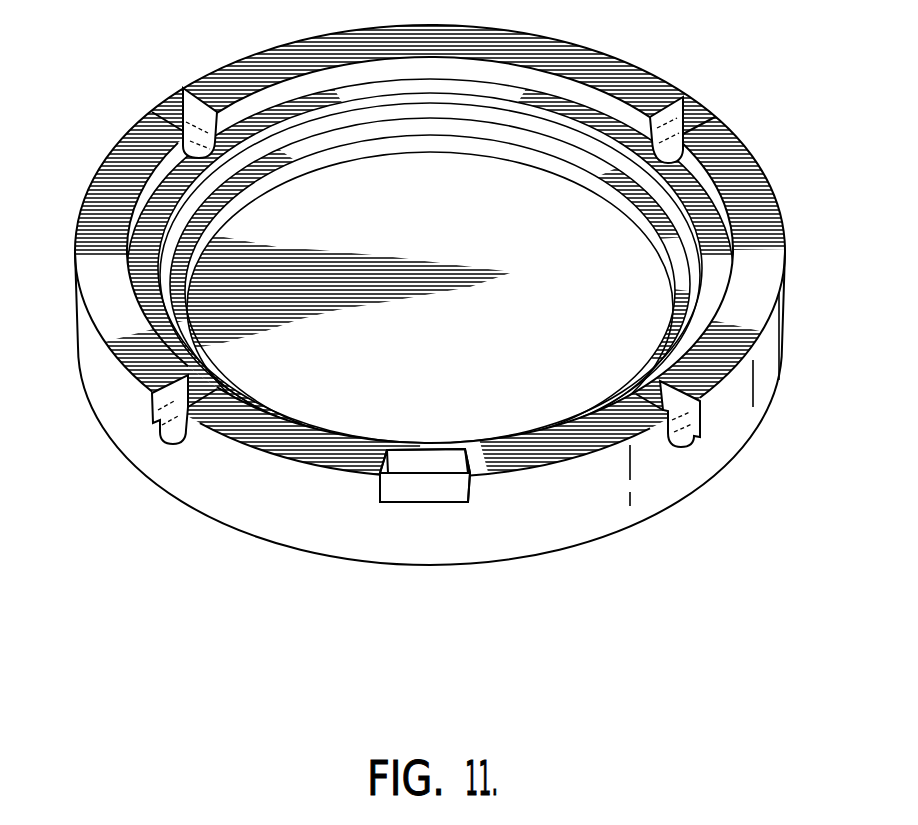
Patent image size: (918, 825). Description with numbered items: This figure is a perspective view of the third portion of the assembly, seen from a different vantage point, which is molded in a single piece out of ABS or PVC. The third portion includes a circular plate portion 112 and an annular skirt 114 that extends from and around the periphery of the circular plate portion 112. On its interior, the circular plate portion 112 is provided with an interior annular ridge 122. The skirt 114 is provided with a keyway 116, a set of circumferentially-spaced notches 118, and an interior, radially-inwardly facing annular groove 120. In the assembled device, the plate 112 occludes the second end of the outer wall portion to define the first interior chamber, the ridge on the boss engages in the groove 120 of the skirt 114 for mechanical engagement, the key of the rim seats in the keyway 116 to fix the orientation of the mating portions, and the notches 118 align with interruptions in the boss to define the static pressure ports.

The circular plate portion 112 is at (514, 397).
The annular skirt 114 is at (742, 407).
The keyway 116 is at (420, 498).
The circumferentially-spaced notches 118 is at (155, 102).
The annular groove 120 is at (238, 150).
The interior annular ridge 122 is at (650, 235).